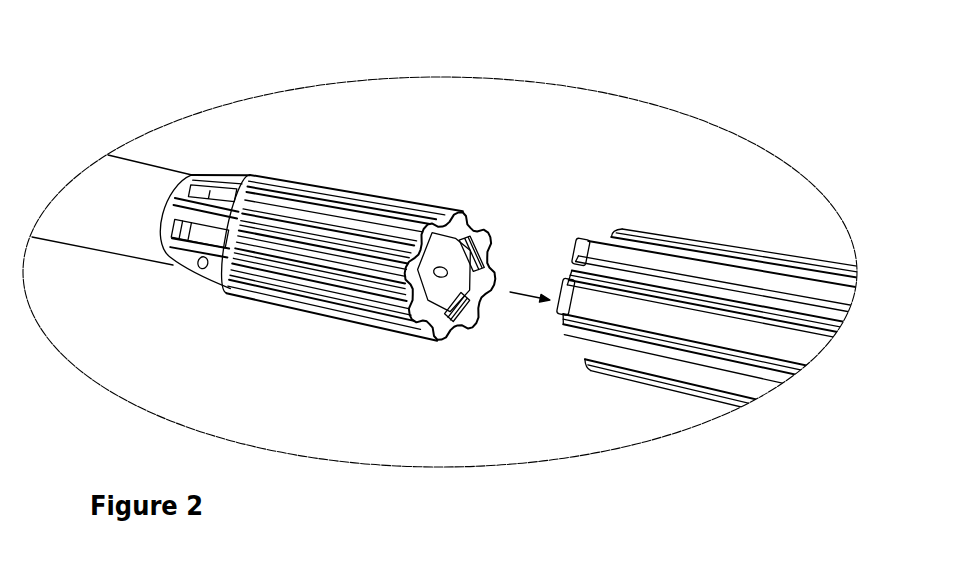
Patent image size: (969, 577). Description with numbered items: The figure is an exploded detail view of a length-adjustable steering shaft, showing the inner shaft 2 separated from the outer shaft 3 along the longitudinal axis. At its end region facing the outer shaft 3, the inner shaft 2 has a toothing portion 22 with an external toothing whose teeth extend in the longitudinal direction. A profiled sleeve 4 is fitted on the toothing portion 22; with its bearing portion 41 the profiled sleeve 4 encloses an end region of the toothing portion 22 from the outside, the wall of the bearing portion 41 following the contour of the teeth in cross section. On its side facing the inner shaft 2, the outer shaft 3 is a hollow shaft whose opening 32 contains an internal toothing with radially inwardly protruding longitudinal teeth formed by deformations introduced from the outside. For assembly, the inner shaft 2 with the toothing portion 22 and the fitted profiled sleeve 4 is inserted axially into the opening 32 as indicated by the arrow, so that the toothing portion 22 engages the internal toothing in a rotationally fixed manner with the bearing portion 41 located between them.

The inner shaft 2 is at (140, 190).
The outer shaft 3 is at (740, 280).
The profiled sleeve 4 is at (336, 188).
The toothing portion 22 is at (249, 172).
The opening 32 is at (578, 249).
The bearing portion 41 is at (390, 225).